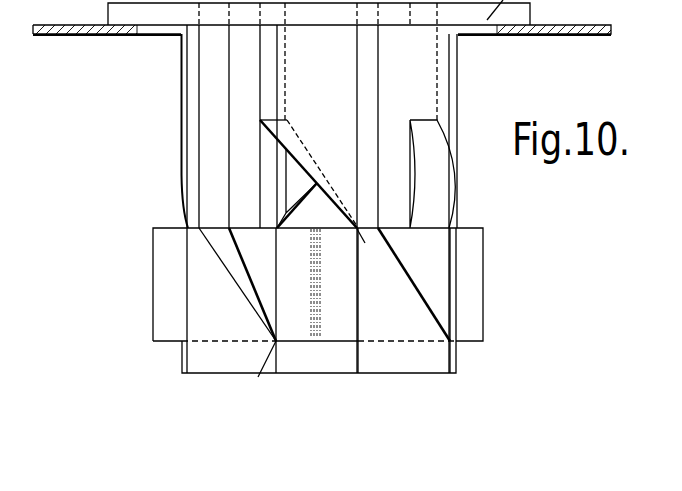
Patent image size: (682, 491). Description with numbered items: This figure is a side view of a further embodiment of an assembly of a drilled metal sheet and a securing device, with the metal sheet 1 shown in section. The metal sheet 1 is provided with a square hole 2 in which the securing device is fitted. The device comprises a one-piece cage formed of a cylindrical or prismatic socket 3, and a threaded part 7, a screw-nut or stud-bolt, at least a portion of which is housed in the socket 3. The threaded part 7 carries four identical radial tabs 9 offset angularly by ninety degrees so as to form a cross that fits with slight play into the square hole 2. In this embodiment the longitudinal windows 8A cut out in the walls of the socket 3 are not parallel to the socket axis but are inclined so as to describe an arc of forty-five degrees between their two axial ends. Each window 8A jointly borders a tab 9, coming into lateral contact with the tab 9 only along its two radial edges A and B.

The metal sheet 1 is at (580, 38).
The square hole 2 is at (495, 36).
The socket 3 is at (179, 123).
The threaded part 7 is at (466, 229).
The inclined longitudinal windows 8A is at (385, 65).
The radial tab 9 is at (470, 258).
The radial edge A is at (368, 248).
The radial edge B is at (261, 374).